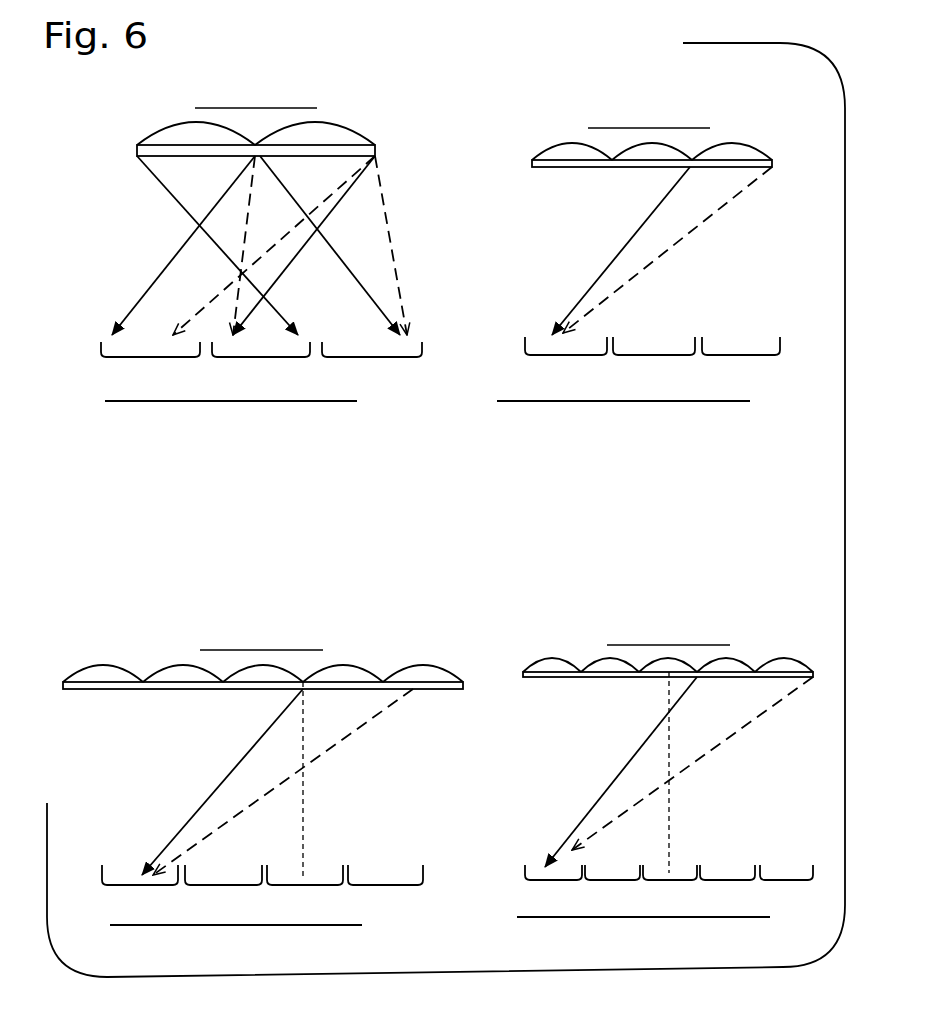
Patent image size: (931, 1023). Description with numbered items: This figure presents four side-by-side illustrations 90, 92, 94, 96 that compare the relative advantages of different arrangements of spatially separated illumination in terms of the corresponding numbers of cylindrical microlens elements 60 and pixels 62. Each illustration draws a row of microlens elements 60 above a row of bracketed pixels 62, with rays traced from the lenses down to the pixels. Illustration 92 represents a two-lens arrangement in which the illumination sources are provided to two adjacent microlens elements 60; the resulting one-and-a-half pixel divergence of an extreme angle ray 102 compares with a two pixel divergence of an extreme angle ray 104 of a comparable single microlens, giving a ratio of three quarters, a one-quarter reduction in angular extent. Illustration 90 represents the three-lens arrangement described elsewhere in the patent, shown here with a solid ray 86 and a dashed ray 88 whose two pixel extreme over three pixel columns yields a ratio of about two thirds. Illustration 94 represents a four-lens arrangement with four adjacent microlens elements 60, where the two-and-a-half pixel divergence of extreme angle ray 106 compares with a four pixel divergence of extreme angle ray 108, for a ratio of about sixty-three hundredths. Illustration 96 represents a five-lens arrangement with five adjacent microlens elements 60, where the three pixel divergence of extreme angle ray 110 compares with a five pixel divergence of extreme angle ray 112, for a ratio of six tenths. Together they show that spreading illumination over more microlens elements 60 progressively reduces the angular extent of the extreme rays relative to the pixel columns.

The microlens element 60 is at (350, 143).
The pixel 62 is at (590, 352).
The extreme light ray (three column) 86 is at (640, 223).
The central light ray (three column) 88 is at (692, 230).
The illustration 90 is at (503, 129).
The illustration 92 is at (378, 103).
The illustration 94 is at (400, 622).
The illustration 96 is at (763, 632).
The extreme angle ray 102 is at (318, 200).
The extreme angle ray 104 is at (172, 253).
The extreme angle ray 106 is at (243, 753).
The extreme angle ray 108 is at (277, 787).
The extreme angle ray 110 is at (632, 752).
The extreme angle ray 112 is at (703, 750).